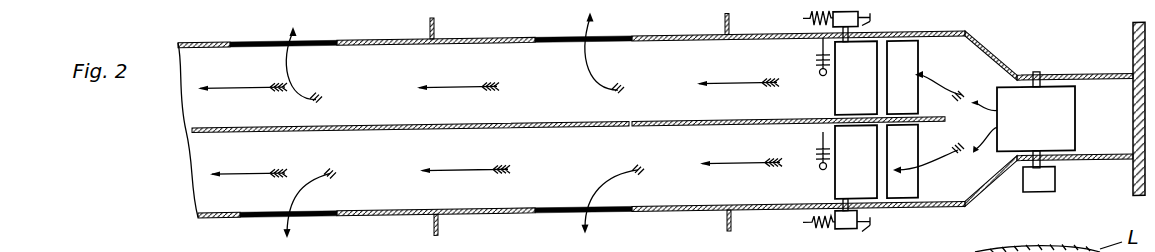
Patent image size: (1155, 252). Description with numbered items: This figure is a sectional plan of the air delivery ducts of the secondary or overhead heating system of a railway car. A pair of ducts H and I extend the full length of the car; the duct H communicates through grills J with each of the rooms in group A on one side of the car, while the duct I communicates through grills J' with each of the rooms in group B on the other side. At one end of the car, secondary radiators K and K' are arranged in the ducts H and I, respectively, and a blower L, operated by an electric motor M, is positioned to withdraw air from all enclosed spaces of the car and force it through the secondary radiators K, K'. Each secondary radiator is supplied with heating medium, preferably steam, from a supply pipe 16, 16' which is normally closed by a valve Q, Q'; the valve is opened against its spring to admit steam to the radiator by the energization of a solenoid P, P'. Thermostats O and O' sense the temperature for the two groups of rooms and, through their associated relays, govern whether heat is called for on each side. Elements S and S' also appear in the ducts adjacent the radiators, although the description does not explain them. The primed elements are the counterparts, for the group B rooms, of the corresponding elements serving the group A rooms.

The group of rooms A is at (411, 209).
The group of rooms B is at (402, 40).
The duct H is at (513, 202).
The duct I is at (484, 41).
The grills J is at (442, 207).
The grills J' is at (431, 58).
The secondary radiator K is at (835, 162).
The secondary radiator K' is at (838, 78).
The blower L is at (1050, 105).
The electric motor M is at (1033, 192).
The thermostat O is at (812, 151).
The thermostat O' is at (810, 57).
The solenoid P is at (818, 233).
The solenoid P' is at (809, 16).
The valve Q is at (846, 224).
The valve Q' is at (866, 21).
The lower screen S is at (925, 161).
The upper screen S' is at (925, 77).
The supply pipe 16 is at (880, 232).
The supply pipe 16' is at (892, 24).